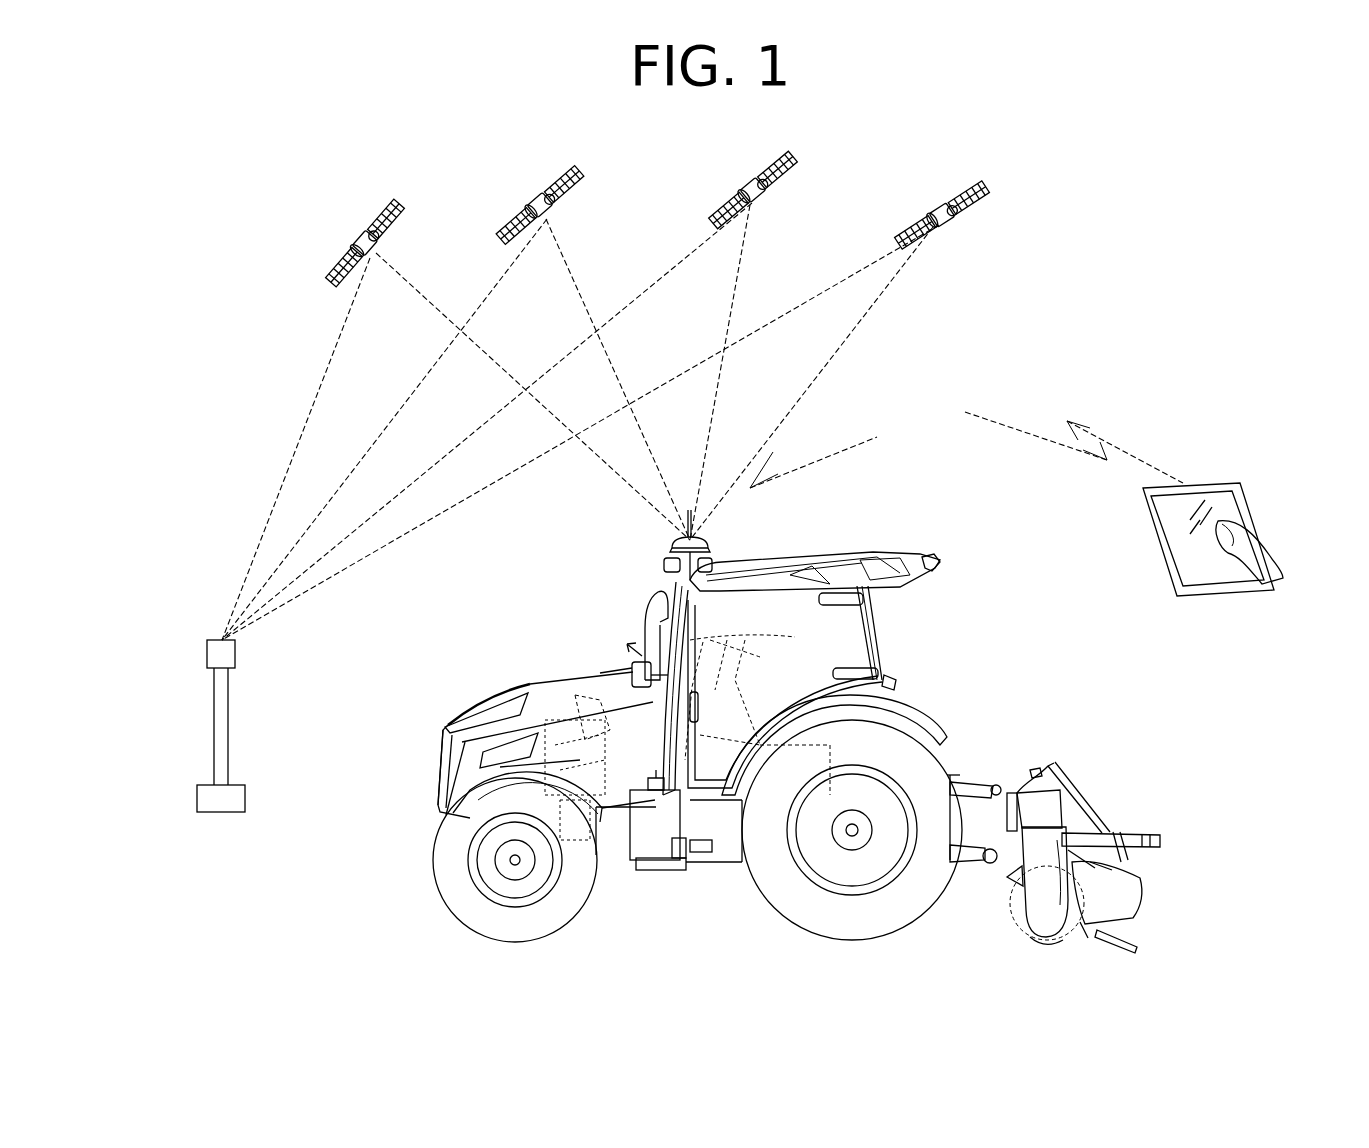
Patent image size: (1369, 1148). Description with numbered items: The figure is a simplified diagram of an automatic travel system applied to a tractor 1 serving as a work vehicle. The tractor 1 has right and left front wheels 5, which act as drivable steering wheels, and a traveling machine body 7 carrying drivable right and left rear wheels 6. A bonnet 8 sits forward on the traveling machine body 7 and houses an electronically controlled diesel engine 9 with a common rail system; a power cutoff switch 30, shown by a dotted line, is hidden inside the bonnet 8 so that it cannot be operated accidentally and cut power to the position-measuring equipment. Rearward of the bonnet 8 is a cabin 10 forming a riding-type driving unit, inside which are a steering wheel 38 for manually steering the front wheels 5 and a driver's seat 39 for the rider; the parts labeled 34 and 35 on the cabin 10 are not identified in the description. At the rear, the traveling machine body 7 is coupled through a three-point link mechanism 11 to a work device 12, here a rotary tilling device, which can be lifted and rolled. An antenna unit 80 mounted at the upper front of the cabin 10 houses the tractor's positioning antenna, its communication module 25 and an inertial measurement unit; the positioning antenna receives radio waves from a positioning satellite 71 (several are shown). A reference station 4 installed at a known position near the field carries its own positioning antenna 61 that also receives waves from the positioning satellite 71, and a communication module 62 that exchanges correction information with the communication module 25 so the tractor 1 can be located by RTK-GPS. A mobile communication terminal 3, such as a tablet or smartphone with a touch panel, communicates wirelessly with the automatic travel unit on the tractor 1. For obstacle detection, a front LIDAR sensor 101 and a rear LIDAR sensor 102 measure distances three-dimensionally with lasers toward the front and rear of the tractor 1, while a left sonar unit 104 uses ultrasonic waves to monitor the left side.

The tractor 1 is at (699, 719).
The mobile communication terminal 3 is at (1244, 536).
The reference station 4 is at (178, 723).
The front wheels 5 is at (440, 900).
The rear wheels 6 is at (800, 920).
The traveling machine body 7 is at (632, 872).
The bonnet 8 is at (500, 700).
The engine 9 is at (560, 690).
The cabin 10 is at (828, 634).
The three-point link mechanism 11 is at (980, 736).
The work device 12 is at (1112, 776).
The communication module 25 is at (682, 523).
The power cutoff switch 30 is at (440, 765).
The rear pillar 34 is at (882, 650).
The roof 35 is at (868, 556).
The steering wheel 38 is at (866, 640).
The driver's seat 39 is at (898, 683).
The positioning antenna 61 is at (207, 646).
The communication module 62 is at (214, 768).
The positioning satellite 71 is at (355, 243).
The antenna unit 80 is at (710, 533).
The front LIDAR sensor 101 is at (664, 567).
The rear LIDAR sensor 102 is at (945, 556).
The left sonar unit 104 is at (690, 858).